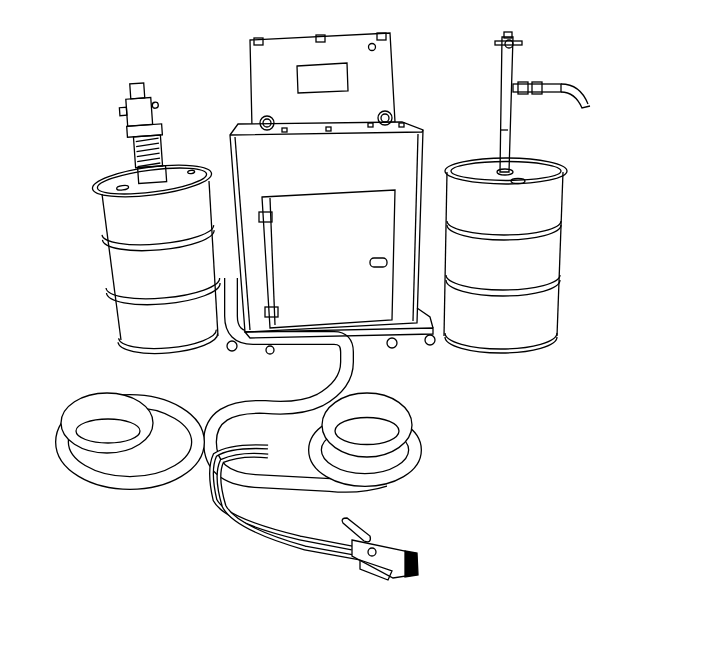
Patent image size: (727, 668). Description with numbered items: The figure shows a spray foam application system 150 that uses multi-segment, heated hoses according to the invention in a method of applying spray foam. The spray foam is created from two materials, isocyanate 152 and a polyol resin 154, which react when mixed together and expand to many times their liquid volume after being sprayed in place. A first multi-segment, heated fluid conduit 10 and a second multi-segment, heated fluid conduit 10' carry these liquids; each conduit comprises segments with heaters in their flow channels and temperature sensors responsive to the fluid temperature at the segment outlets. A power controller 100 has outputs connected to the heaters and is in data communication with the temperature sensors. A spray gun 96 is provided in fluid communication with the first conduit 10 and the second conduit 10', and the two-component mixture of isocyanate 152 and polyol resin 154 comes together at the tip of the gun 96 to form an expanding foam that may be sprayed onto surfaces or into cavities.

The power controller 100 is at (283, 38).
The spray foam application system 150 is at (655, 123).
The isocyanate 152 is at (181, 283).
The polyol resin 154 is at (526, 279).
The first multi-segment, heated fluid conduit 10 is at (289, 506).
The second multi-segment, heated fluid conduit 10' is at (238, 416).
The spray gun 96 is at (413, 553).